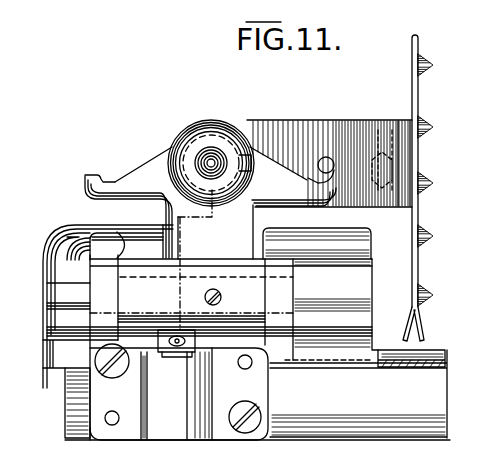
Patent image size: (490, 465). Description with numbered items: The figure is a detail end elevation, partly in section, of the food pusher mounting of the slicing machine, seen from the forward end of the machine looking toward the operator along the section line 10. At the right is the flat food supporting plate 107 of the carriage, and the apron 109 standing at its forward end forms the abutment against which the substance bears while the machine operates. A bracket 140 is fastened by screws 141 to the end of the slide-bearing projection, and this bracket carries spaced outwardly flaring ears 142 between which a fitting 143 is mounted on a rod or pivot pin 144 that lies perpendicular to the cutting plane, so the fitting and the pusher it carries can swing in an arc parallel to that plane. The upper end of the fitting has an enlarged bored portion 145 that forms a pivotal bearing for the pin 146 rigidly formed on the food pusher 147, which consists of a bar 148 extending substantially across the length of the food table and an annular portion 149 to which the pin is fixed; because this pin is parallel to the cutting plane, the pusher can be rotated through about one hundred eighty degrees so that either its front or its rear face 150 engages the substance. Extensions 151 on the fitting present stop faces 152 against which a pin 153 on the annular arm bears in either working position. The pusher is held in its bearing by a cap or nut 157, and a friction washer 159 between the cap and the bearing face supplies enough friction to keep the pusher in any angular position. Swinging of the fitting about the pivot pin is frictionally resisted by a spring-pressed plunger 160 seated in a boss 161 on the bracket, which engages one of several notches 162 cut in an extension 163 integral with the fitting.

The section line 10 is at (178, 464).
The food supporting plate 107 is at (433, 347).
The apron 109 is at (42, 258).
The bracket 140 is at (257, 388).
The screws 141 is at (100, 366).
The ears 142 is at (83, 248).
The fitting 143 is at (118, 237).
The pivot pin 144 is at (298, 294).
The enlarged bored portion 145 is at (229, 138).
The pin 146 is at (200, 158).
The food pusher 147 is at (418, 95).
The bar 148 is at (403, 122).
The annular portion 149 is at (313, 120).
The rear face 150 is at (412, 58).
The extensions 151 is at (333, 190).
The stop faces 152 is at (93, 172).
The pin 153 is at (326, 157).
The cap or nut 157 is at (168, 148).
The friction washer 159 is at (196, 137).
The spring-pressed plunger 160 is at (173, 357).
The boss 161 is at (210, 428).
The notches 162 is at (168, 330).
The extension 163 is at (198, 348).